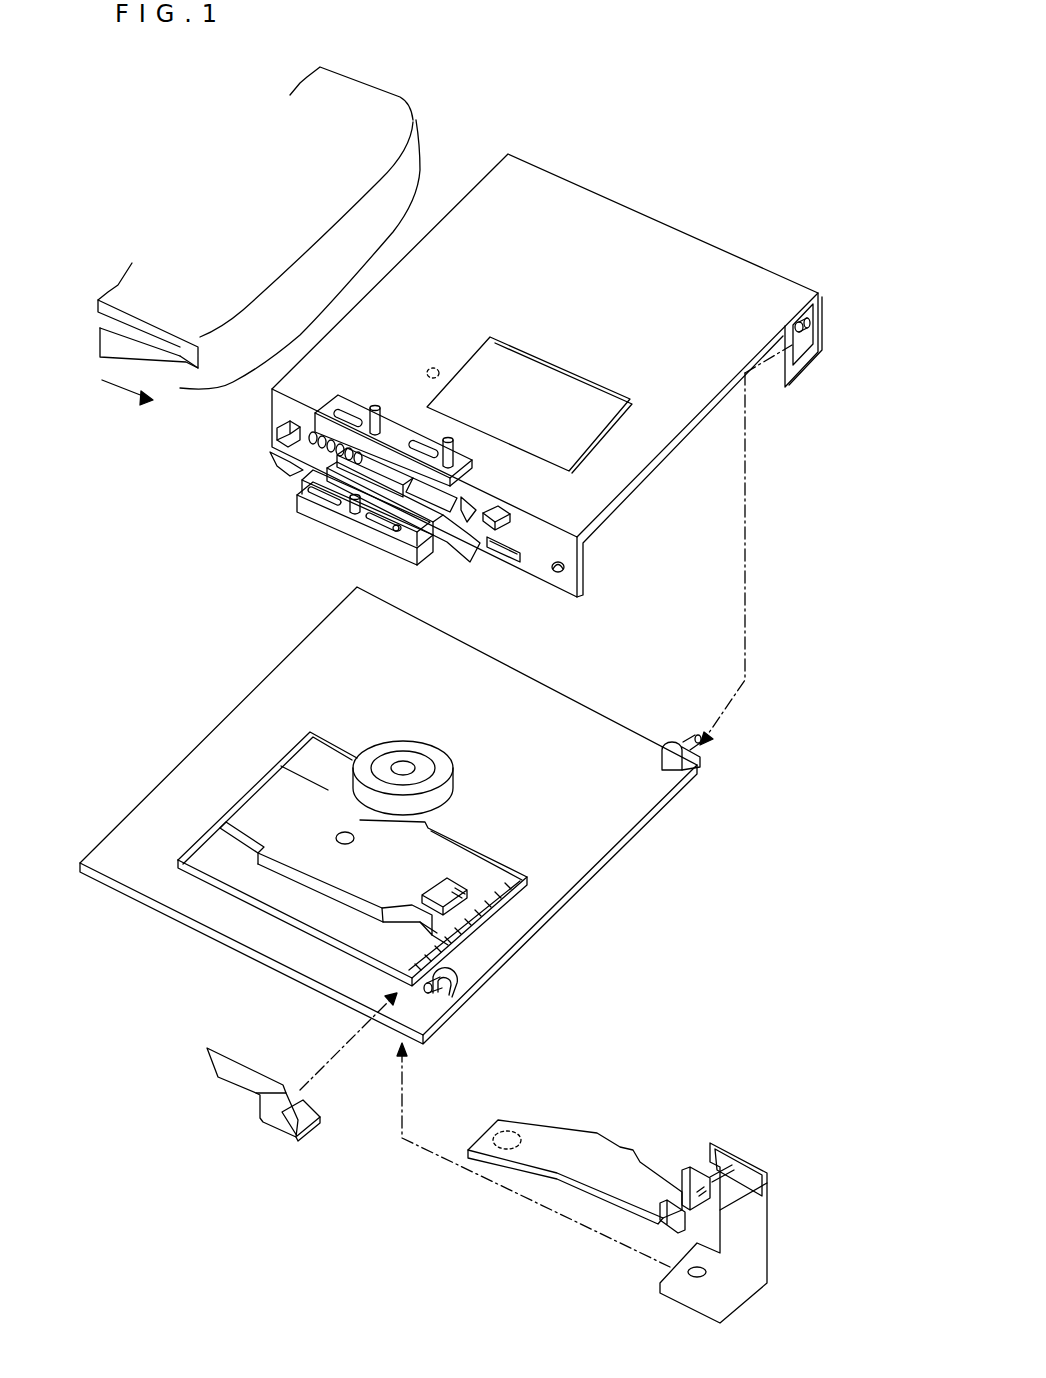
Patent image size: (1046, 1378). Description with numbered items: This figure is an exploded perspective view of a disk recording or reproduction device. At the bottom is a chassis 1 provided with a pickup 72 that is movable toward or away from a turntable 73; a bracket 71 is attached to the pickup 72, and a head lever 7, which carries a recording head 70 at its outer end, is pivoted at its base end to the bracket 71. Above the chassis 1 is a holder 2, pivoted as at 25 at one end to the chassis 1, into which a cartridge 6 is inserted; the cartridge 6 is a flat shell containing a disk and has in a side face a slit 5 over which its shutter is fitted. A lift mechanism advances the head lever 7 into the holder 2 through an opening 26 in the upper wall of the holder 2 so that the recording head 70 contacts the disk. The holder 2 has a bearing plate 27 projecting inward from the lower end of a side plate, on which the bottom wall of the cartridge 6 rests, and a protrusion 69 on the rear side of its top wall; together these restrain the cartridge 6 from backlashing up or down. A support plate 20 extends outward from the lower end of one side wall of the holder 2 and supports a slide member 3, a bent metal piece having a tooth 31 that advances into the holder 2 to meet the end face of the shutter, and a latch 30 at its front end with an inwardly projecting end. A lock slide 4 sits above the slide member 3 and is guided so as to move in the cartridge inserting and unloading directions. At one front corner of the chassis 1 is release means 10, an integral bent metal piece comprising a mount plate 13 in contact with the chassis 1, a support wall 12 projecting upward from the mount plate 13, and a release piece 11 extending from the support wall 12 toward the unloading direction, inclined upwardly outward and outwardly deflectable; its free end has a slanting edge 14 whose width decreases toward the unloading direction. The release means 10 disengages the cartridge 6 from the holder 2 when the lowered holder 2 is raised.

The chassis 1 is at (608, 823).
The holder 2 is at (620, 235).
The slide member 3 is at (413, 538).
The lock slide 4 is at (397, 433).
The slit 5 is at (193, 338).
The cartridge 6 is at (372, 99).
The head lever 7 is at (575, 1145).
The release means 10 is at (242, 1146).
The release piece 11 is at (233, 1085).
The support wall 12 is at (260, 1094).
The mount plate 13 is at (316, 1144).
The edge 14 is at (210, 1057).
The support plate 20 is at (327, 523).
The pivot 25 is at (805, 330).
The opening 26 is at (610, 425).
The bearing plate 27 is at (793, 358).
The latch 30 is at (478, 560).
The tooth 31 is at (303, 460).
The protrusion 69 is at (440, 370).
The recording head 70 is at (523, 1122).
The bracket 71 is at (753, 1207).
The pickup 72 is at (337, 836).
The turntable 73 is at (410, 747).